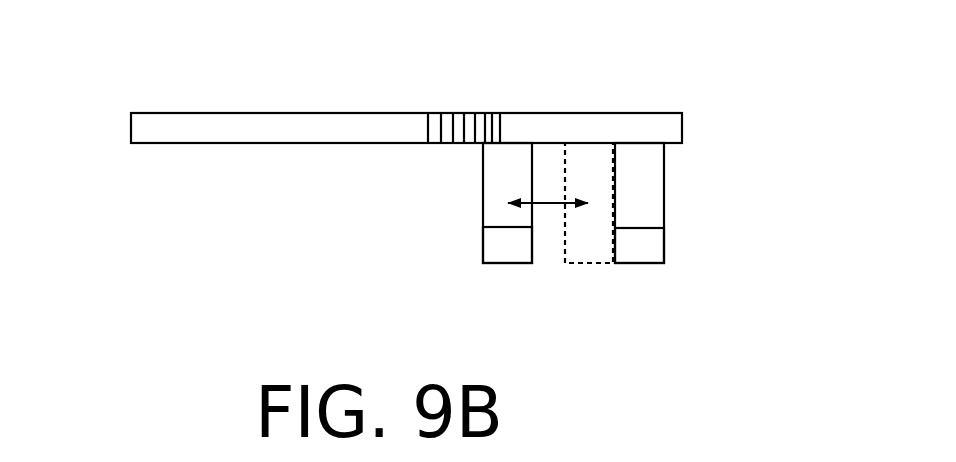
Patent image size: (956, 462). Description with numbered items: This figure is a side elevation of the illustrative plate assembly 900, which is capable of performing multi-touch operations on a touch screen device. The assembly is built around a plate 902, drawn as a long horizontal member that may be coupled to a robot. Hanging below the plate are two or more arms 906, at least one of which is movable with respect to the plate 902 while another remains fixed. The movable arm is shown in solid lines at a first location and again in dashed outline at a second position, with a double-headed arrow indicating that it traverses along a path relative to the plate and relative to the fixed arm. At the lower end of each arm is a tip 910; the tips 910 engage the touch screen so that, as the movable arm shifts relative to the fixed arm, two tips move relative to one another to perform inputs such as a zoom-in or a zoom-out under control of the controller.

The plate assembly 900 is at (651, 42).
The plate 902 is at (173, 113).
The arms 906 is at (663, 310).
The tips 910 is at (588, 335).